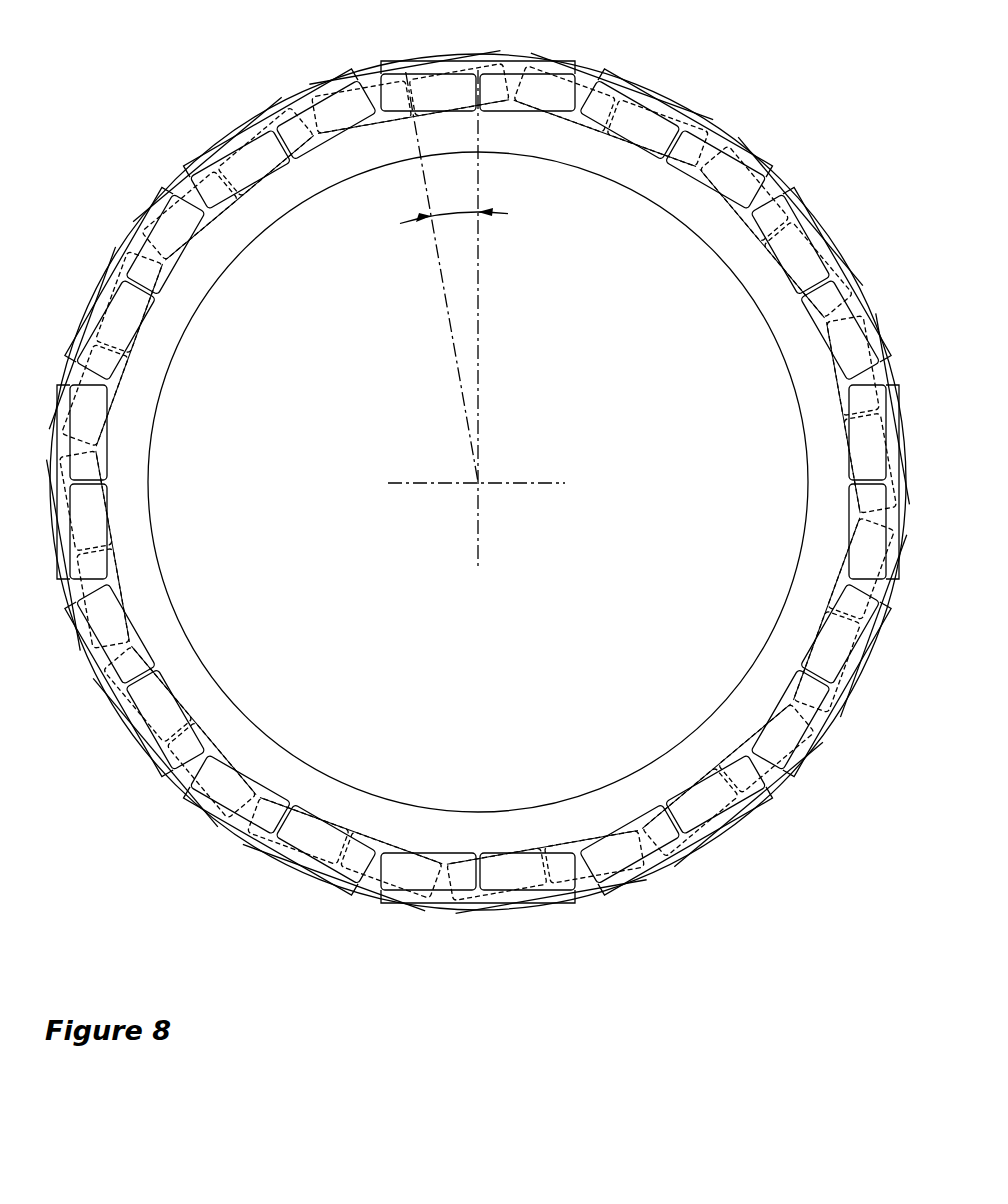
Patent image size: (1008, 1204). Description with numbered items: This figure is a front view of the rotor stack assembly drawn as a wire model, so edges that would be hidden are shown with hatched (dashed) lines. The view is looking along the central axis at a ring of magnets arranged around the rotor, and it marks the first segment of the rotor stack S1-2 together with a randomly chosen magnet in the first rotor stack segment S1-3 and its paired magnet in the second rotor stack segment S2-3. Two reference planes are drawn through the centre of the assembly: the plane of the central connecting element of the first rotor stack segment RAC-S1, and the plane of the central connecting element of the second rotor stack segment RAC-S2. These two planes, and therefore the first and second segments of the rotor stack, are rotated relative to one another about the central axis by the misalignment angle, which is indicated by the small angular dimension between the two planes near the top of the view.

The first segment of the rotor stack S1-2 is at (710, 228).
The magnet in the first rotor stack segment S1-3 is at (557, 92).
The magnet in the second rotor stack segment S2-3 is at (510, 57).
The plane of the central connecting element of the first rotor stack segment RAC-S1 is at (478, 270).
The plane of the central connecting element of the second rotor stack segment RAC-S2 is at (442, 270).